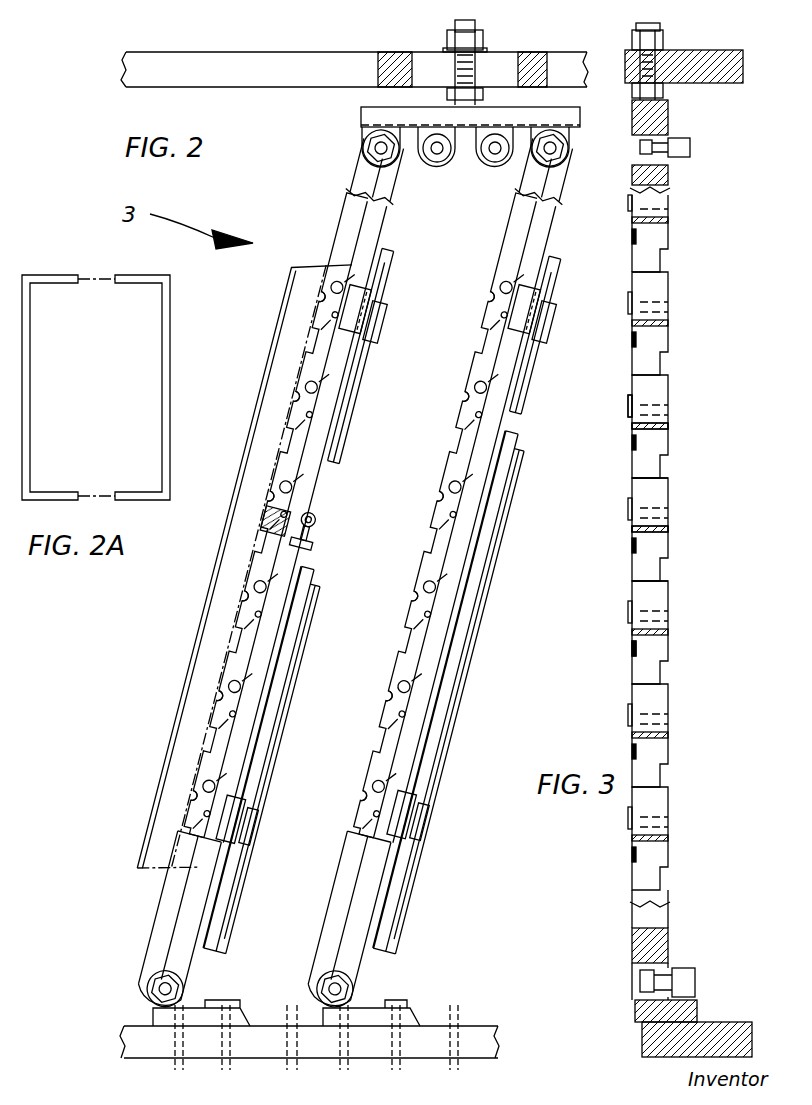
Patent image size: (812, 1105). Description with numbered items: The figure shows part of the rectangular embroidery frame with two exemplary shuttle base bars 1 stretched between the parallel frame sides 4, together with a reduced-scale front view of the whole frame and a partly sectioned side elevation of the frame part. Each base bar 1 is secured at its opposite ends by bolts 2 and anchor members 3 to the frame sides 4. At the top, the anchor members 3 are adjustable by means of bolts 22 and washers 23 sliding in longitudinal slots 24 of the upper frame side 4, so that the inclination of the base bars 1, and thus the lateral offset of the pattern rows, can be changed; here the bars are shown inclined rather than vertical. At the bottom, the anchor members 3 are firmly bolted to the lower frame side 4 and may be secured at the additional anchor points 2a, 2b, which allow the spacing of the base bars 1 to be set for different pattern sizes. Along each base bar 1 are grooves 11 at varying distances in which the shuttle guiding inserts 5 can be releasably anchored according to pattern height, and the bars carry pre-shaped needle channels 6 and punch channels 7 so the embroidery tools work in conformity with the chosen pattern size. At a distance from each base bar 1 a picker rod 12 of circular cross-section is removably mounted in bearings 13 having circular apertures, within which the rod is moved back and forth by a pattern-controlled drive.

In FIG. 2, the shuttle base bar 1 is at (548, 208).
In FIG. 3, the shuttle base bar 1 is at (640, 872).
In FIG. 2, the bolt 2 is at (372, 150).
In FIG. 3, the bolt 2 is at (642, 147).
In FIG. 2, the anchor point 2a is at (437, 155).
In FIG. 2, the anchor point 2b is at (495, 155).
In FIG. 2, the anchor member 3 is at (360, 112).
In FIG. 3, the anchor member 3 is at (632, 115).
In FIG. 2, the frame side 4 is at (281, 52).
In FIG. 2A, the frame side 4 is at (130, 280).
In FIG. 3, the frame side 4 is at (630, 62).
In FIG. 2, the shuttle guiding insert 5 is at (258, 367).
In FIG. 2, the needle channel 6 is at (310, 352).
In FIG. 3, the needle channel 6 is at (665, 478).
In FIG. 2, the punch channel 7 is at (333, 294).
In FIG. 3, the punch channel 7 is at (630, 412).
In FIG. 2, the groove 11 is at (296, 405).
In FIG. 3, the groove 11 is at (668, 427).
In FIG. 2, the picker rod 12 is at (463, 636).
In FIG. 2, the bearing 13 is at (384, 313).
In FIG. 2, the bolt 22 is at (483, 35).
In FIG. 3, the bolt 22 is at (663, 36).
In FIG. 2, the washer 23 is at (487, 49).
In FIG. 2, the longitudinal slot 24 is at (416, 63).